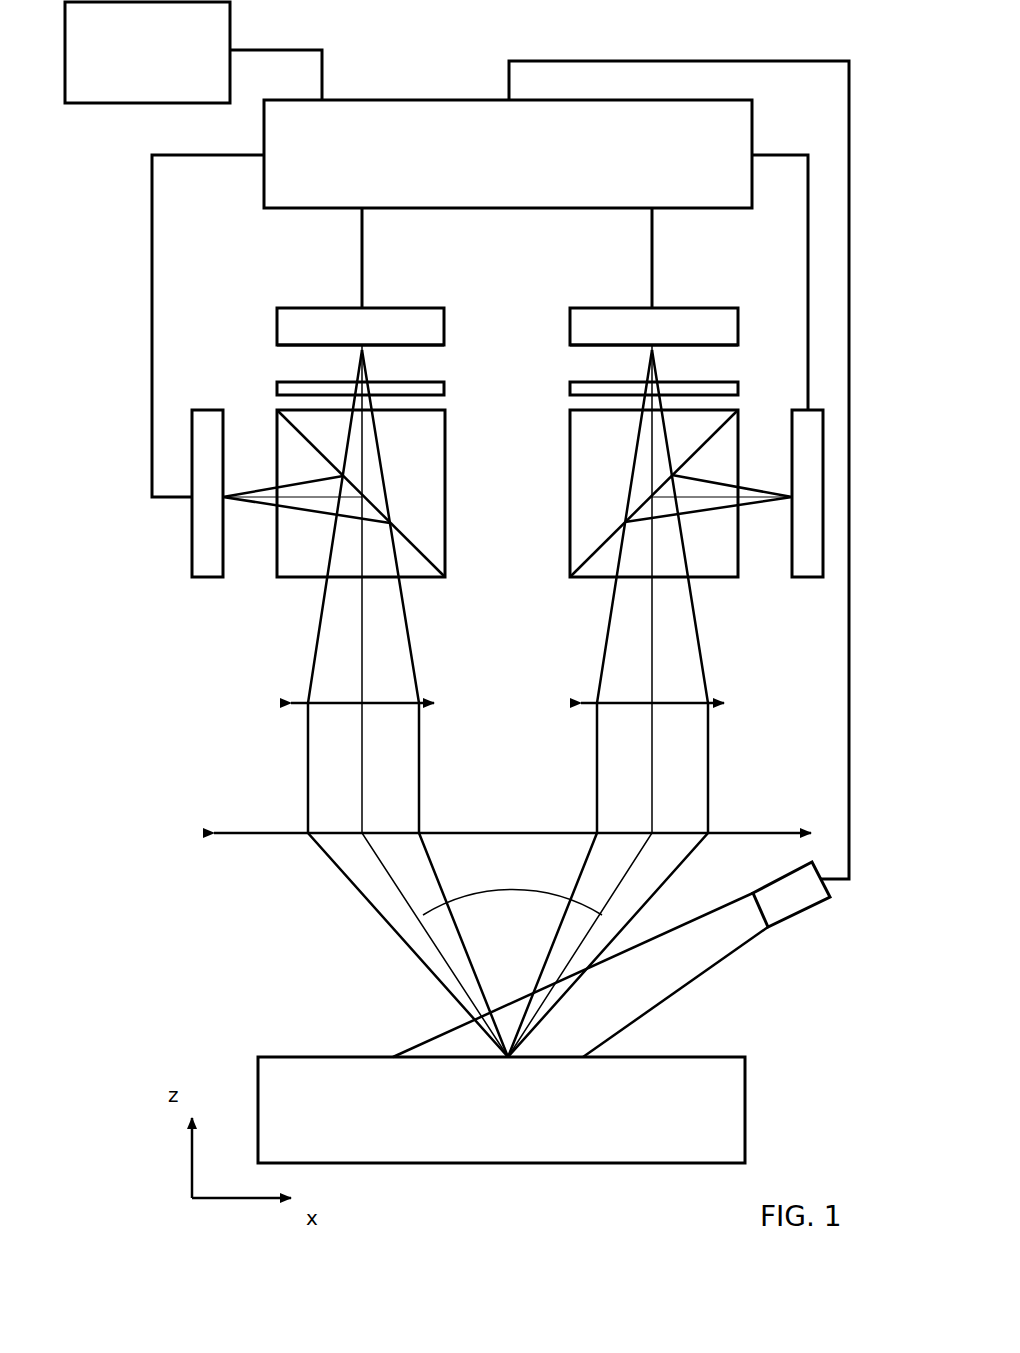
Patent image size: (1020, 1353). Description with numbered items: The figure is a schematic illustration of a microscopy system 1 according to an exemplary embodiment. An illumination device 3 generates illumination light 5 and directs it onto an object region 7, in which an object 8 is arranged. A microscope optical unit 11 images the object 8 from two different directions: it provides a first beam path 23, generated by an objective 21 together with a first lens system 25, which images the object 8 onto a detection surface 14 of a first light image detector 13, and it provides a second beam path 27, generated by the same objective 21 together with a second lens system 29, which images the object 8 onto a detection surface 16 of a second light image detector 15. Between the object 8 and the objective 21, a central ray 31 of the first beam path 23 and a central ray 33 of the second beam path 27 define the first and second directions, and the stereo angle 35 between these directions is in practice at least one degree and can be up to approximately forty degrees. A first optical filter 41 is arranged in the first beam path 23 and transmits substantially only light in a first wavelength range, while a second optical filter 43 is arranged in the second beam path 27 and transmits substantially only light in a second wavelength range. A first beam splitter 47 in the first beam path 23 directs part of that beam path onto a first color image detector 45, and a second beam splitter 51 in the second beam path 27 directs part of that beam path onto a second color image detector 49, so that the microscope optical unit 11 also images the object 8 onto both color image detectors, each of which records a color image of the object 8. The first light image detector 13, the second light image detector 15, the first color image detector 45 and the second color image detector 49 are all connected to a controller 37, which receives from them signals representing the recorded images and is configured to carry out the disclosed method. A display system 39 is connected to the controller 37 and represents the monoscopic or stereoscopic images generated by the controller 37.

The microscopy system 1 is at (160, 963).
The illumination device 3 is at (798, 917).
The illumination light 5 is at (692, 982).
The object region 7 is at (363, 1027).
The object 8 is at (506, 1124).
The microscope optical unit 11 is at (162, 748).
The first light image detector 13 is at (668, 308).
The detection surface 14 is at (598, 345).
The second light image detector 15 is at (378, 308).
The detection surface 16 is at (307, 345).
The objective 21 is at (745, 833).
The first beam path 23 is at (590, 762).
The first lens system 25 is at (717, 697).
The second beam path 27 is at (308, 762).
The second lens system 29 is at (425, 697).
The central ray 31 is at (653, 777).
The central ray 33 is at (363, 777).
The stereo angle 35 is at (490, 877).
The controller 37 is at (521, 169).
The display system 39 is at (161, 65).
The first optical filter 41 is at (707, 382).
The second optical filter 43 is at (432, 382).
The first color image detector 45 is at (808, 577).
The first beam splitter 47 is at (568, 490).
The second color image detector 49 is at (217, 577).
The second beam splitter 51 is at (447, 433).